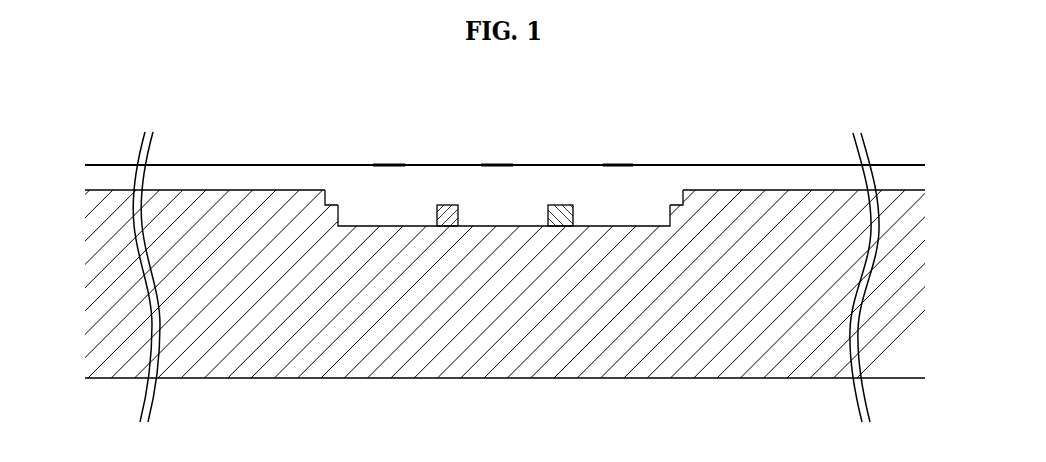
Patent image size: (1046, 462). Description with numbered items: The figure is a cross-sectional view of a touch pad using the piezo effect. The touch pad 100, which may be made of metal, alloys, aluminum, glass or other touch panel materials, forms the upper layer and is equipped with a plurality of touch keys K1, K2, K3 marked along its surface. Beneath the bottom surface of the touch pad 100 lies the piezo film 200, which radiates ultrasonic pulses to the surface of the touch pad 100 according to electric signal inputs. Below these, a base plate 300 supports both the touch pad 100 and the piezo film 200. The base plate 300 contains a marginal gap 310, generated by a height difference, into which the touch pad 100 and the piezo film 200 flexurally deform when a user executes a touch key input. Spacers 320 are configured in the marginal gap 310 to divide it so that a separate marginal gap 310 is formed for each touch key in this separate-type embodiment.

The touch pad 100 is at (801, 178).
The piezo film 200 is at (650, 196).
The base plate 300 is at (742, 355).
The marginal gap 310 is at (635, 217).
The spacers 320 is at (550, 228).
The touch key K1 is at (389, 143).
The touch key K2 is at (497, 143).
The touch key K3 is at (616, 143).